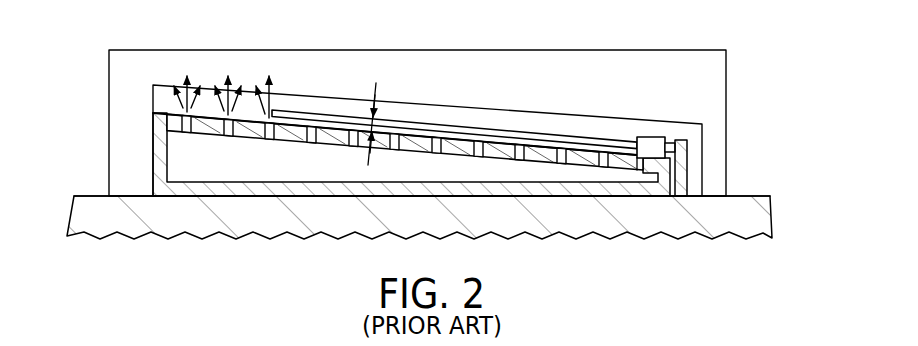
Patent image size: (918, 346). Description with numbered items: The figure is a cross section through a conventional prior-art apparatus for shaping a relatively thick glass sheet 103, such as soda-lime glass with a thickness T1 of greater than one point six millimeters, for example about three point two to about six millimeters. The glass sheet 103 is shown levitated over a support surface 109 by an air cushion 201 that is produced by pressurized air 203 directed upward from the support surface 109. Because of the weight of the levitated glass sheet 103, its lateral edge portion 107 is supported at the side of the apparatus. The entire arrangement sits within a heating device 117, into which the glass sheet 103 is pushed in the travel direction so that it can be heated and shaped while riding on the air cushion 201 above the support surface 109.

The heating device 117 is at (479, 50).
The pressurized air 203 is at (170, 97).
The support surface 109 is at (217, 130).
The air cushion 201 is at (509, 142).
The glass sheet 103 is at (413, 118).
The thickness T1 is at (370, 119).
The lateral edge portion 107 is at (662, 143).